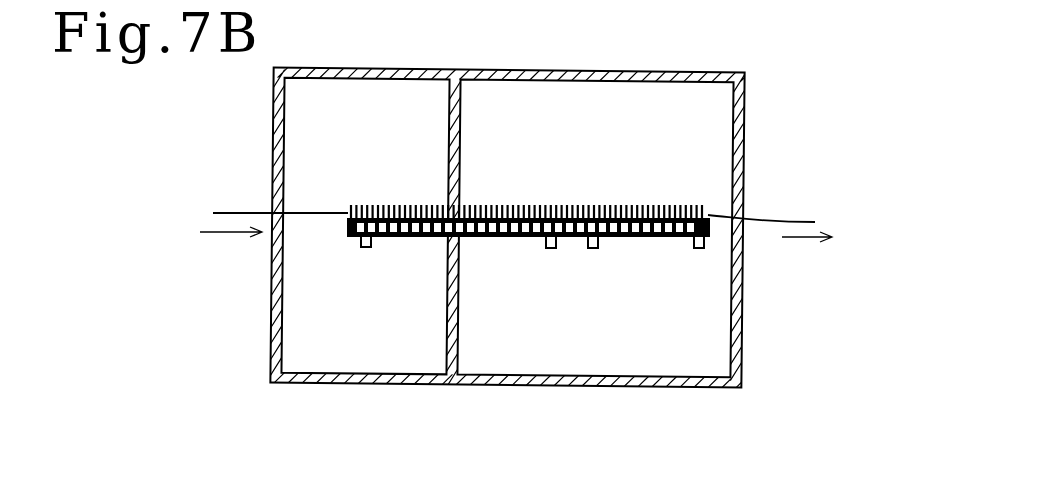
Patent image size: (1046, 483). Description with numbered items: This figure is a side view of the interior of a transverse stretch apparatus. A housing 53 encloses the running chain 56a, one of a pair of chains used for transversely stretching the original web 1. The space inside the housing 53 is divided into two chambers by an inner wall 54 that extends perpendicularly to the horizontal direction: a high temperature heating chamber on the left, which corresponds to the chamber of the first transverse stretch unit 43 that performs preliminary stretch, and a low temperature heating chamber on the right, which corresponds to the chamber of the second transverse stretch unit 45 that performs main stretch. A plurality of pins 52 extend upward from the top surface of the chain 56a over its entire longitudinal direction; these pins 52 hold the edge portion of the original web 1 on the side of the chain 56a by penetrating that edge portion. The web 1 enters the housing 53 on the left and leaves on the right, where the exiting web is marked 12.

The original web 1 is at (235, 213).
The workpiece exiting the apparatus 12 is at (773, 222).
The first transverse stretch unit 43 is at (270, 60).
The second transverse stretch unit 45 is at (457, 61).
The pins 52 is at (385, 207).
The housing 53 is at (342, 374).
The inner wall 54 is at (450, 333).
The chain 56a is at (632, 237).